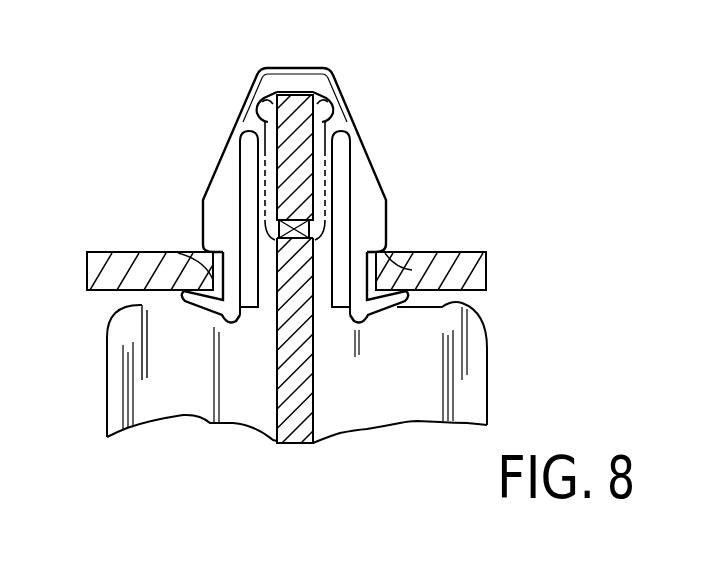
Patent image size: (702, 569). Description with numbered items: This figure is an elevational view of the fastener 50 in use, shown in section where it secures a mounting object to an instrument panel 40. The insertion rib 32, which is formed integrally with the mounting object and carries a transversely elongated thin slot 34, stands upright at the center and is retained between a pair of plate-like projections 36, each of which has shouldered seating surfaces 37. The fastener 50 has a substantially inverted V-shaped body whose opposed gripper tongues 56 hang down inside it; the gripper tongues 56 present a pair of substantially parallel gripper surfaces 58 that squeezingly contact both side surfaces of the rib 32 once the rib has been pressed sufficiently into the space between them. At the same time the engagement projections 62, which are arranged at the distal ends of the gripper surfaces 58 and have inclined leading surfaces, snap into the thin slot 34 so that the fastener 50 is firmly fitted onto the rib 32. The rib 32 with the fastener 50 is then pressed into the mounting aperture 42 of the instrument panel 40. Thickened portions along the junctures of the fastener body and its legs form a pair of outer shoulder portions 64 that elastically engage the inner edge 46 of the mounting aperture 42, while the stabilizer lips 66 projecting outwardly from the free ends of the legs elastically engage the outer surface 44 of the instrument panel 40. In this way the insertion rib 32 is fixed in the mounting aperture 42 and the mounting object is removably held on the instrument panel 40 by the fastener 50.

The insertion rib 32 is at (313, 372).
The thin slot 34 is at (290, 100).
The plate-like projection 36 is at (333, 245).
The shouldered seating surface 37 is at (114, 309).
The instrument panel 40 is at (450, 263).
The mounting aperture 42 is at (200, 252).
The outer surface 44 is at (110, 291).
The inner edge 46 is at (432, 256).
The fastener 50 is at (197, 86).
The gripper tongue 56 is at (270, 157).
The gripper surface 58 is at (319, 188).
The engagement projection 62 is at (277, 241).
The outer shoulder portion 64 is at (212, 251).
The stabilizer lip 66 is at (191, 300).